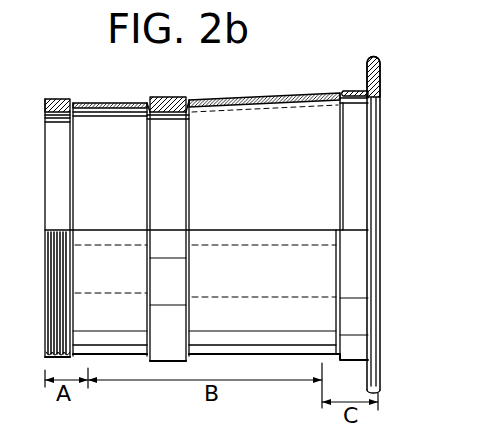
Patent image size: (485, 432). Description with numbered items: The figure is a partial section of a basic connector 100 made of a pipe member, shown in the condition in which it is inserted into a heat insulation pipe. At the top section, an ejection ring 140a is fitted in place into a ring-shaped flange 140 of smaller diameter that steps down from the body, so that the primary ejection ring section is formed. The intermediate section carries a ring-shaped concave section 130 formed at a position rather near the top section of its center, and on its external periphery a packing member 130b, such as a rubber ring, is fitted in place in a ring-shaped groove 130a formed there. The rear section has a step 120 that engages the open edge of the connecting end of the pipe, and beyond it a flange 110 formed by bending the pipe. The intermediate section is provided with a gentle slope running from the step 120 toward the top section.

The connector body 100 is at (422, 295).
The flange 110 is at (381, 82).
The step 120 is at (341, 91).
The ring-shaped concave section 130 is at (172, 122).
The ring-shaped groove 130a is at (148, 123).
The packing member 130b is at (170, 97).
The ring-shaped flange 140 is at (60, 122).
The ejection ring 140a is at (57, 99).